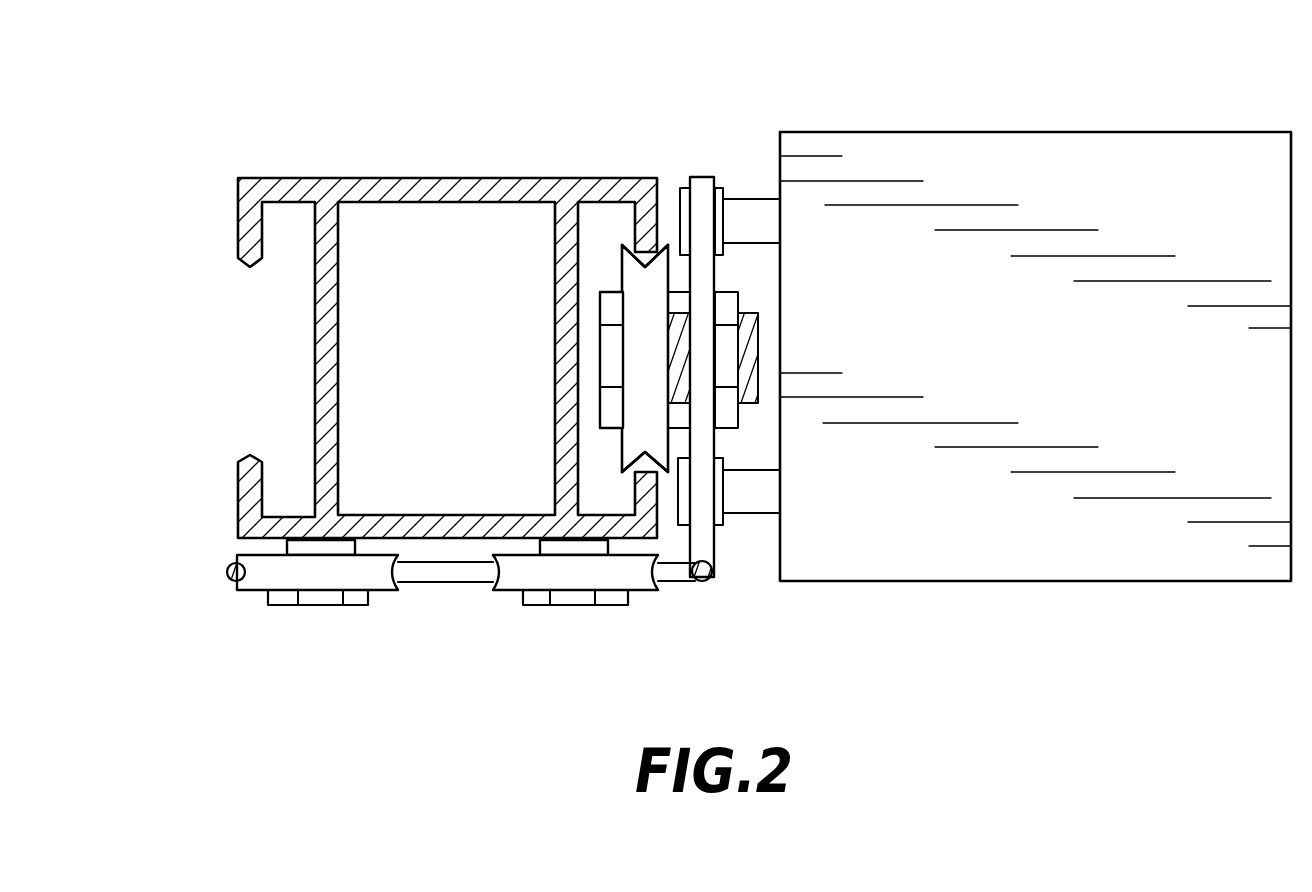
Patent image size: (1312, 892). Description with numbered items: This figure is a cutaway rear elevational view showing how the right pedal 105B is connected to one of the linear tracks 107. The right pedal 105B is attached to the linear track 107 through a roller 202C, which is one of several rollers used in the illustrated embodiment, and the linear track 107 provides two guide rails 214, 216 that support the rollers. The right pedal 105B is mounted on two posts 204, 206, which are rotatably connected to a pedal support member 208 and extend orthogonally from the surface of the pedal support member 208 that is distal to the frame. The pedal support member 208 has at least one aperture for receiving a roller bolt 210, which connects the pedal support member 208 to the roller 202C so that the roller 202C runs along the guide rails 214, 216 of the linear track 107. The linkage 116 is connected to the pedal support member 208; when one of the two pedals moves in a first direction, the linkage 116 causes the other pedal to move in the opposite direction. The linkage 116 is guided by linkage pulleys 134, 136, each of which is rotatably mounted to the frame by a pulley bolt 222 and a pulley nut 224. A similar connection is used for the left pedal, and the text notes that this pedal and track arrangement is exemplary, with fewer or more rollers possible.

The linear track 107 is at (507, 177).
The right pedal 105B is at (1035, 131).
The roller 202C is at (640, 288).
The post 204 is at (752, 198).
The post 206 is at (750, 513).
The pedal support member 208 is at (717, 555).
The roller bolt 210 is at (606, 360).
The guide rail 214 is at (636, 233).
The guide rail 216 is at (642, 480).
The pulley bolt 222 is at (285, 551).
The pulley nut 224 is at (285, 600).
The linkage pulley 134 is at (319, 578).
The linkage pulley 136 is at (578, 580).
The linkage 116 is at (447, 573).